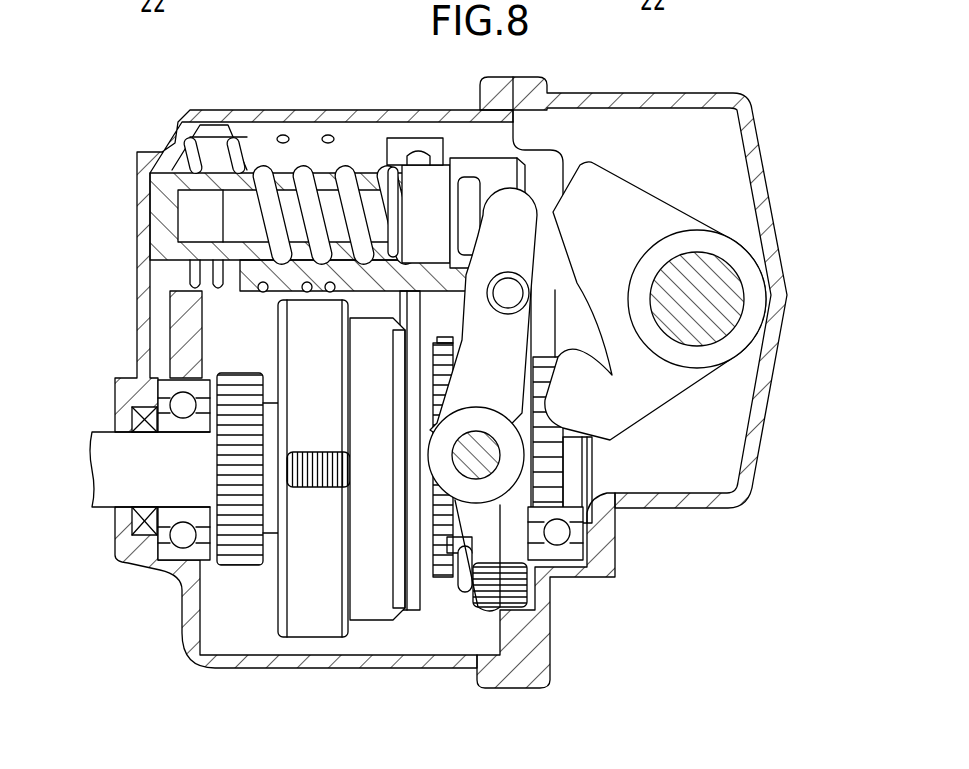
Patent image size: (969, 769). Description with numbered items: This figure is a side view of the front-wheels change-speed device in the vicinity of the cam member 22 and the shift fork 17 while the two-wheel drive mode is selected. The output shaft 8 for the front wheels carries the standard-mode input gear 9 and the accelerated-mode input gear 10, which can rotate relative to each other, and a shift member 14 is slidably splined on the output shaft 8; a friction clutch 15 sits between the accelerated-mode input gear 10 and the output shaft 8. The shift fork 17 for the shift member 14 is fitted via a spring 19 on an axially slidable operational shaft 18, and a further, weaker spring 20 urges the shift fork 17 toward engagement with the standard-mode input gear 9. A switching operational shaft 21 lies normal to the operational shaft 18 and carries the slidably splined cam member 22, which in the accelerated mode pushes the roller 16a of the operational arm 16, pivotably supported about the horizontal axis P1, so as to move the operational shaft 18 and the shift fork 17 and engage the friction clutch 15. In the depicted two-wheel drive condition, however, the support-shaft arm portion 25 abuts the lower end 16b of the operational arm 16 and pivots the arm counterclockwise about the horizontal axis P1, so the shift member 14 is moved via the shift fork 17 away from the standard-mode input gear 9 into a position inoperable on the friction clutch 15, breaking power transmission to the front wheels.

The output shaft 8 is at (108, 497).
The standard-mode input gear 9 is at (503, 610).
The accelerated-mode input gear 10 is at (243, 567).
The shift member 14 is at (367, 617).
The friction clutch 15 is at (298, 627).
The operational arm 16 is at (535, 456).
The roller 16a is at (510, 290).
The lower end 16b is at (487, 550).
The shift fork 17 is at (403, 403).
The operational shaft 18 is at (325, 195).
The spring 19 is at (293, 165).
The spring 20 is at (223, 128).
The switching operational shaft 21 is at (730, 283).
The cam member 22 is at (627, 197).
The support-shaft arm portion 25 is at (462, 588).
The horizontal axis P1 is at (478, 460).